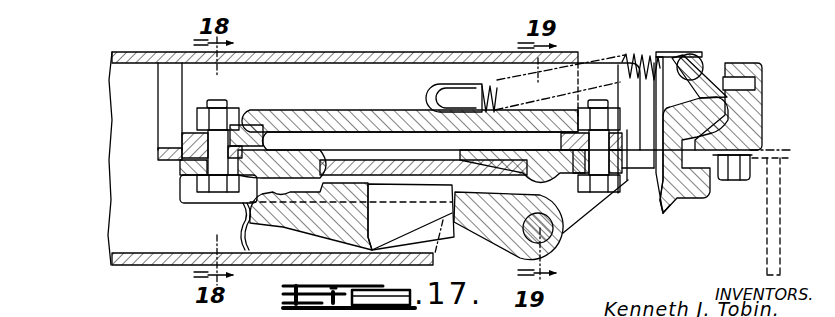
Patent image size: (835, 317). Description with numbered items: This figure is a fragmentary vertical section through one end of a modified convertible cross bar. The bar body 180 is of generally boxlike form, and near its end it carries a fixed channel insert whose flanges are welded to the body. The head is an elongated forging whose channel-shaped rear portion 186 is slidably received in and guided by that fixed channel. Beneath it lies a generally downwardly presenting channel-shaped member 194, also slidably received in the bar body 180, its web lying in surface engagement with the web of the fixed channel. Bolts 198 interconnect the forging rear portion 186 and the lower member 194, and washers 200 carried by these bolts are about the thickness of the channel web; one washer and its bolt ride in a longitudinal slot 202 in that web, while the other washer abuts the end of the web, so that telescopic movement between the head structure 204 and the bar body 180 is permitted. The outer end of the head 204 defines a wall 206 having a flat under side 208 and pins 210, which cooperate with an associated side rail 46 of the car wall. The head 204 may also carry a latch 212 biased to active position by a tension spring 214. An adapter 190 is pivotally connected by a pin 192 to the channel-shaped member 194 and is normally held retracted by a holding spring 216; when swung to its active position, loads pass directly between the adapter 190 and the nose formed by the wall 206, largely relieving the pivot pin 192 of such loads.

The side rail 46 is at (775, 168).
The bar body 180 is at (370, 57).
The rear portion of the head forging 186 is at (268, 75).
The adapter 190 is at (477, 242).
The pin 192 is at (552, 230).
The channel-shaped member 194 is at (342, 162).
The bolts 198 is at (182, 178).
The washers 200 is at (240, 157).
The longitudinal slot 202 is at (392, 153).
The head structure 204 is at (744, 62).
The wall 206 is at (747, 110).
The flat under side 208 is at (763, 155).
The pins 210 is at (740, 178).
The latch 212 is at (700, 190).
The tension spring 214 is at (645, 52).
The holding spring 216 is at (243, 215).